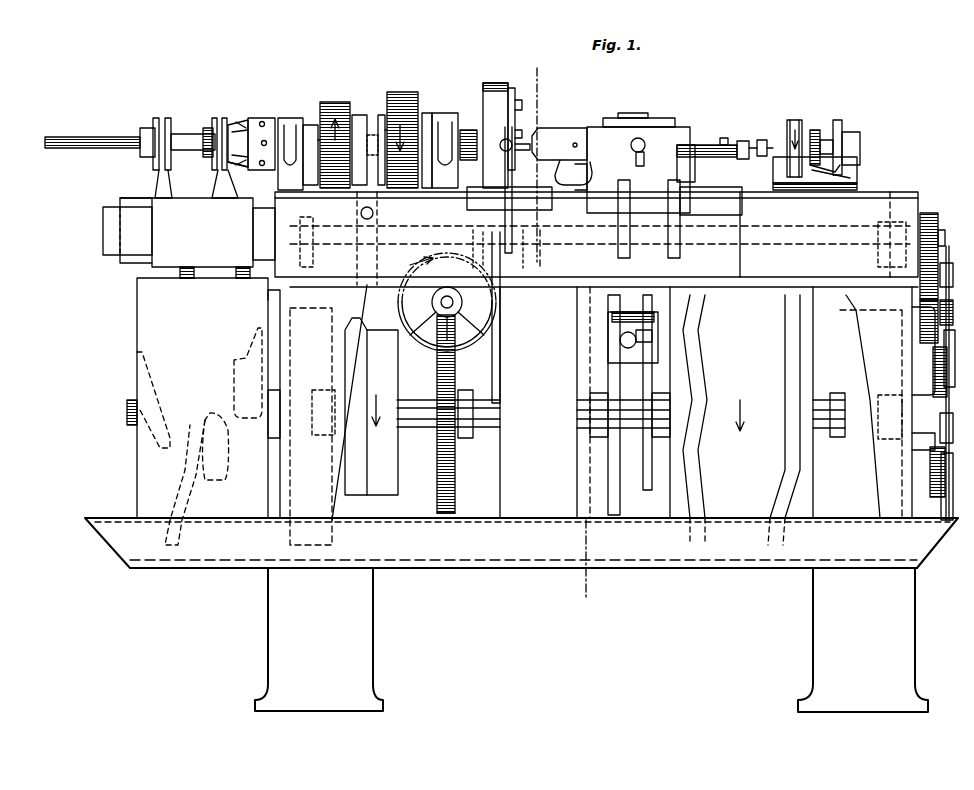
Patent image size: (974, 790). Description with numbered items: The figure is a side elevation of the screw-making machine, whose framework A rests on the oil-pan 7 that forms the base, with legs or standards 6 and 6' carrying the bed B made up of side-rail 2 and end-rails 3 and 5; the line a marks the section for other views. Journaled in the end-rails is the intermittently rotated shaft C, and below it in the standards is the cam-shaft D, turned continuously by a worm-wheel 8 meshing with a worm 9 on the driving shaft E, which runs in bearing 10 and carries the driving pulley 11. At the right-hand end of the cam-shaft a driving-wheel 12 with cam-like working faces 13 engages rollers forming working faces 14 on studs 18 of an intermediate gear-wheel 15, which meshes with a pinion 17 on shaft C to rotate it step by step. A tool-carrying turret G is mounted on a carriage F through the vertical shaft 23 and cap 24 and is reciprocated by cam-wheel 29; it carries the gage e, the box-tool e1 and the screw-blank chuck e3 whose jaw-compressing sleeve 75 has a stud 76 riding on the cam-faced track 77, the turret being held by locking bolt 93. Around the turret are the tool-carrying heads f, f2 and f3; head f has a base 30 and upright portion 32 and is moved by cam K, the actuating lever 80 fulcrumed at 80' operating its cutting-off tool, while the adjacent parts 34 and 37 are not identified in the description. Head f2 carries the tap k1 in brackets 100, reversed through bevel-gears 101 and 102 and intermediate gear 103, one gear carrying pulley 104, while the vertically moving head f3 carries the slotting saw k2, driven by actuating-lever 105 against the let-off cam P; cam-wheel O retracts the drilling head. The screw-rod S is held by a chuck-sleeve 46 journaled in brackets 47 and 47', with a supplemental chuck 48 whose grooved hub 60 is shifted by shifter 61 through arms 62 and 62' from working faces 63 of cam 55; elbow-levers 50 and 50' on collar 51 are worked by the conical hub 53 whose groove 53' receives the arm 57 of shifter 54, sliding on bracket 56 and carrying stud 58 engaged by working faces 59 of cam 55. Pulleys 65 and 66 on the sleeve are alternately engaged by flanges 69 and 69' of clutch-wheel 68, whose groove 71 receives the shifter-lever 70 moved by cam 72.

The framework A is at (521, 543).
The oil-pan 7 is at (478, 504).
The section line a— a is at (559, 334).
The side rail 2 is at (752, 262).
The end-rail 3 is at (302, 262).
The shifter-lever 70 is at (367, 178).
The fulcrum of actuating lever 80' is at (521, 316).
The bed B is at (823, 234).
The end-rail 5 is at (896, 263).
The horizontal shaft C is at (741, 384).
The shifter 54 is at (197, 232).
The shifter 61 is at (135, 198).
The bracket 56 is at (103, 230).
The arm or stud of shifter 61 62' is at (205, 260).
The stud 58 is at (243, 280).
The cam 55 is at (203, 398).
The working faces of cam 55 59 is at (248, 342).
The working faces of cam 55 63 is at (160, 402).
The leg or standard 6' is at (312, 426).
The cam 72 is at (365, 402).
The driving shaft E is at (447, 302).
The bearing 10 is at (432, 300).
The worm 9 is at (437, 314).
The driving pulley 11 is at (478, 340).
The worm-wheel 8 is at (437, 458).
The cam K is at (545, 402).
The let-off cam P is at (608, 474).
The cam-wheel O is at (647, 490).
The actuating-lever 105 is at (618, 345).
The cam-wheel 29 is at (741, 420).
The cam-shaft D is at (838, 432).
The leg or standard 6 is at (887, 402).
The pinion 17 is at (936, 210).
The intermediate gear-wheel 15 is at (920, 290).
The studs 18 is at (947, 268).
The working faces 14 is at (950, 293).
The cam-like working faces 13 is at (950, 330).
The driving-wheel 12 is at (948, 404).
The screw-rod S is at (100, 137).
The peripherally-grooved hub 60 is at (162, 118).
The arm or stud of shifter 61 62 is at (150, 178).
The supplemental chuck 48 is at (190, 136).
The peripheral groove 53' is at (214, 132).
The vertically-extended arm 57 is at (216, 178).
The conical hub 53 is at (238, 130).
The elbow-lever 50 is at (253, 124).
The elbow-lever 50' is at (243, 175).
The collar or hub 51 is at (266, 118).
The bracket 47 is at (298, 154).
The pulley 66 is at (333, 104).
The clutch-wheel 68 is at (335, 139).
The flange of clutch-wheel 69 is at (361, 134).
The peripheral groove 71 is at (380, 116).
The pulley 65 is at (401, 94).
The flange of clutch-wheel 69' is at (400, 121).
The chuck-sleeve 46 is at (455, 112).
The bracket 47' is at (441, 177).
The upright or tool-carrying portion 32 is at (494, 84).
The plate 34 is at (513, 92).
The tool-carrying head f is at (495, 123).
The locking bolt 93 is at (512, 143).
The rod 37 is at (506, 152).
The base 30 is at (509, 198).
The actuating lever 80 is at (529, 198).
The jaw-compressing sleeve 75 is at (572, 130).
The screw-blank carrier or chuck e3 is at (555, 117).
The stud 76 is at (557, 172).
The cam-faced track 77 is at (582, 178).
The tool-carrying turret G is at (638, 170).
The cap 24 is at (662, 120).
The vertical shaft 23 is at (636, 113).
The gage or stop e is at (636, 138).
The slotting saw k2 is at (650, 149).
The vertically reciprocating tool-carrying head f3 is at (649, 213).
The box-tool e1 is at (705, 145).
The tap k1 is at (745, 155).
The tool-carrying head f2 is at (762, 140).
The carriage or turret-slide F is at (711, 201).
The brackets 100 is at (778, 165).
The pulley 104 is at (796, 120).
The bevel-gear 101 is at (815, 132).
The bevel-gear 102 is at (840, 127).
The intermediate bevel-gear 103 is at (850, 176).